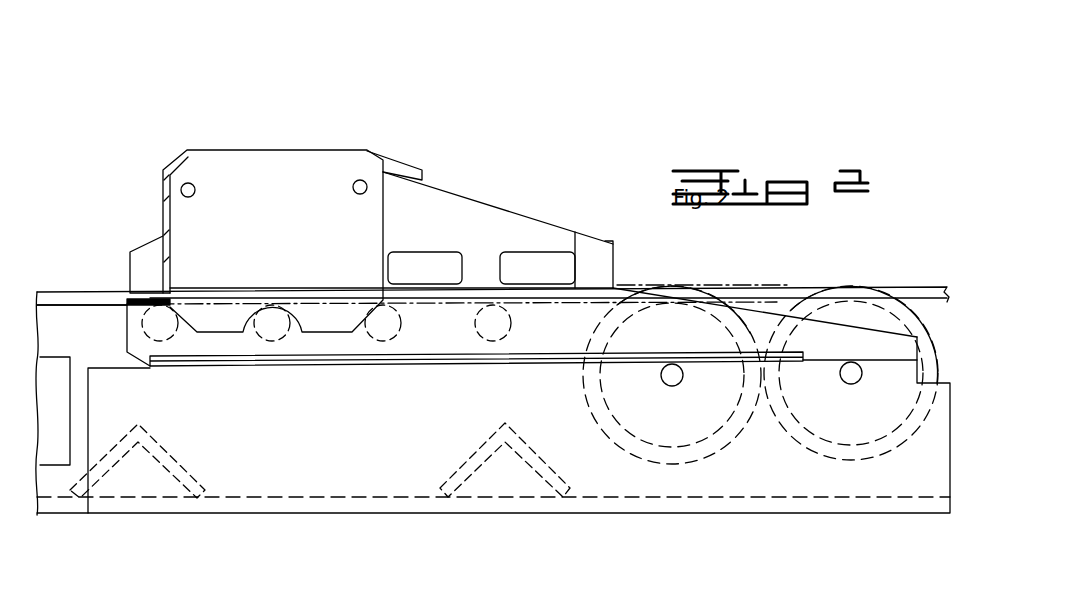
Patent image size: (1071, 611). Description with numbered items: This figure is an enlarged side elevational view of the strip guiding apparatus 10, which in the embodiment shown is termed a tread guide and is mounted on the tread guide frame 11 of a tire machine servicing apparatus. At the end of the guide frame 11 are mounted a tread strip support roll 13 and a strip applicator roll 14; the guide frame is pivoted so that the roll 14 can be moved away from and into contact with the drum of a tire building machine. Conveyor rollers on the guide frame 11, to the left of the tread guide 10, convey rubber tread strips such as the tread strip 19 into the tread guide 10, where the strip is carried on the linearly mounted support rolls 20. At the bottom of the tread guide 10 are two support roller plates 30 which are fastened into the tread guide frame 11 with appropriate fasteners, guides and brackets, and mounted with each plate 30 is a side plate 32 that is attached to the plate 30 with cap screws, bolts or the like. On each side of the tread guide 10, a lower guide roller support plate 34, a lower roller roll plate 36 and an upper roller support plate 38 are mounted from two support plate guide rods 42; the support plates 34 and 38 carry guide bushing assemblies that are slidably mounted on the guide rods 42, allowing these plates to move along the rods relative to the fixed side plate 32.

The strip guiding apparatus 10 is at (372, 239).
The tread guide frame 11 is at (330, 490).
The tread strip support roll 13 is at (673, 292).
The strip applicator roll 14 is at (842, 290).
The rubber tread strip 19 is at (737, 285).
The support rolls 20 is at (267, 337).
The support roller plate 30 is at (475, 347).
The side plate 32 is at (257, 165).
The lower guide roller support plate 34 is at (473, 208).
The lower roller roll plate 36 is at (587, 245).
The upper roller support plate 38 is at (403, 168).
The support plate guide rods 42 is at (192, 183).